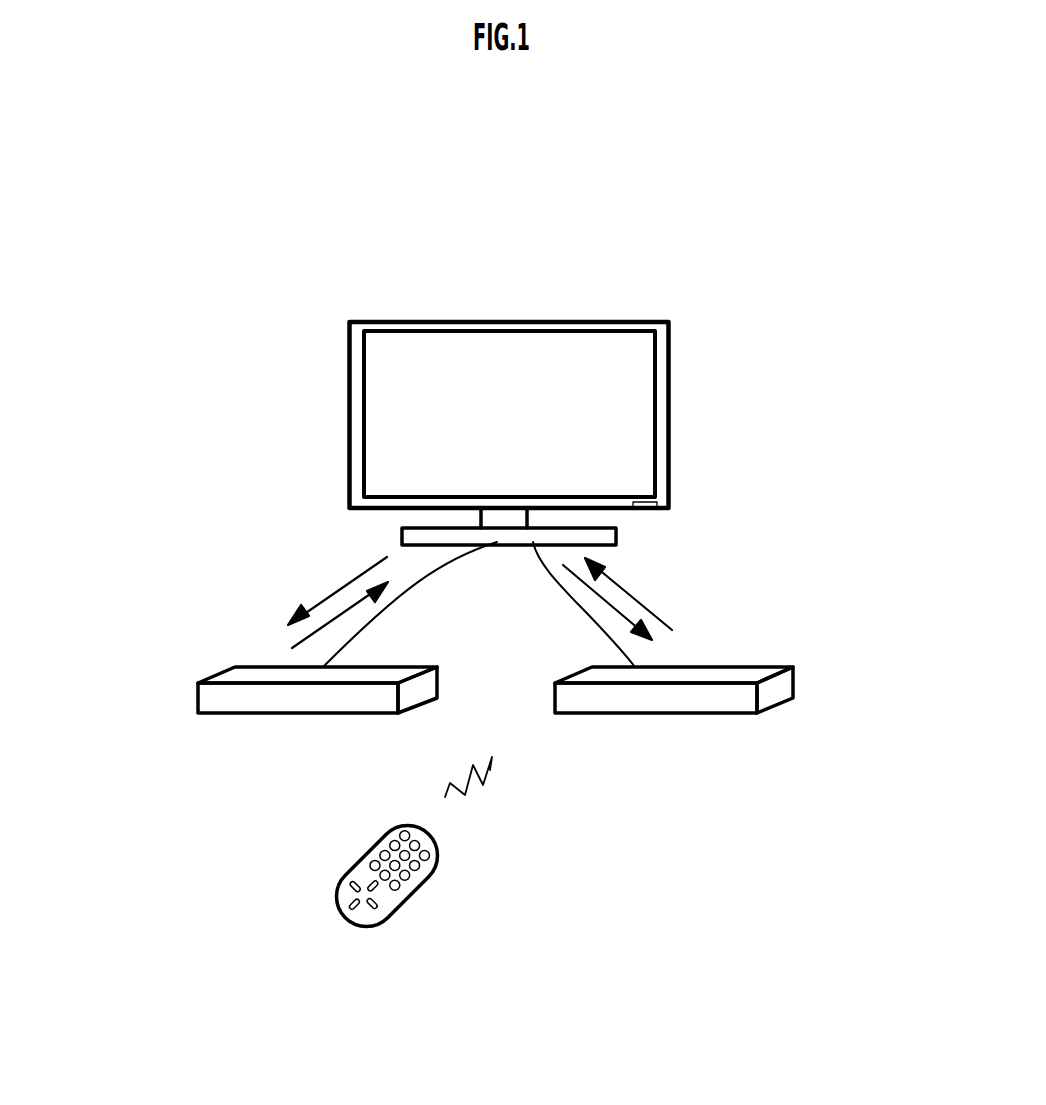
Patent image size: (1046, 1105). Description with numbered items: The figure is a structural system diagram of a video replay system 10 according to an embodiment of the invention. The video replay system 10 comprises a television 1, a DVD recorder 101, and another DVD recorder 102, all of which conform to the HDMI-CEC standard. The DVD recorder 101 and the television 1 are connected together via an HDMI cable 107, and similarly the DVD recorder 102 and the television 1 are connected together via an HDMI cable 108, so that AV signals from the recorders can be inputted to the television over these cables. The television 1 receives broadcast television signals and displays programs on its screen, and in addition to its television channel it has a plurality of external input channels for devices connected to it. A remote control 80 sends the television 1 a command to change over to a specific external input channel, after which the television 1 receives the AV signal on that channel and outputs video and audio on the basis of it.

The television 1 is at (653, 328).
The video replay system 10 is at (792, 388).
The remote control 80 is at (355, 848).
The DVD recorder 101 is at (262, 668).
The DVD recorder 102 is at (740, 665).
The HDMI cable 107 is at (415, 588).
The HDMI cable 108 is at (598, 628).